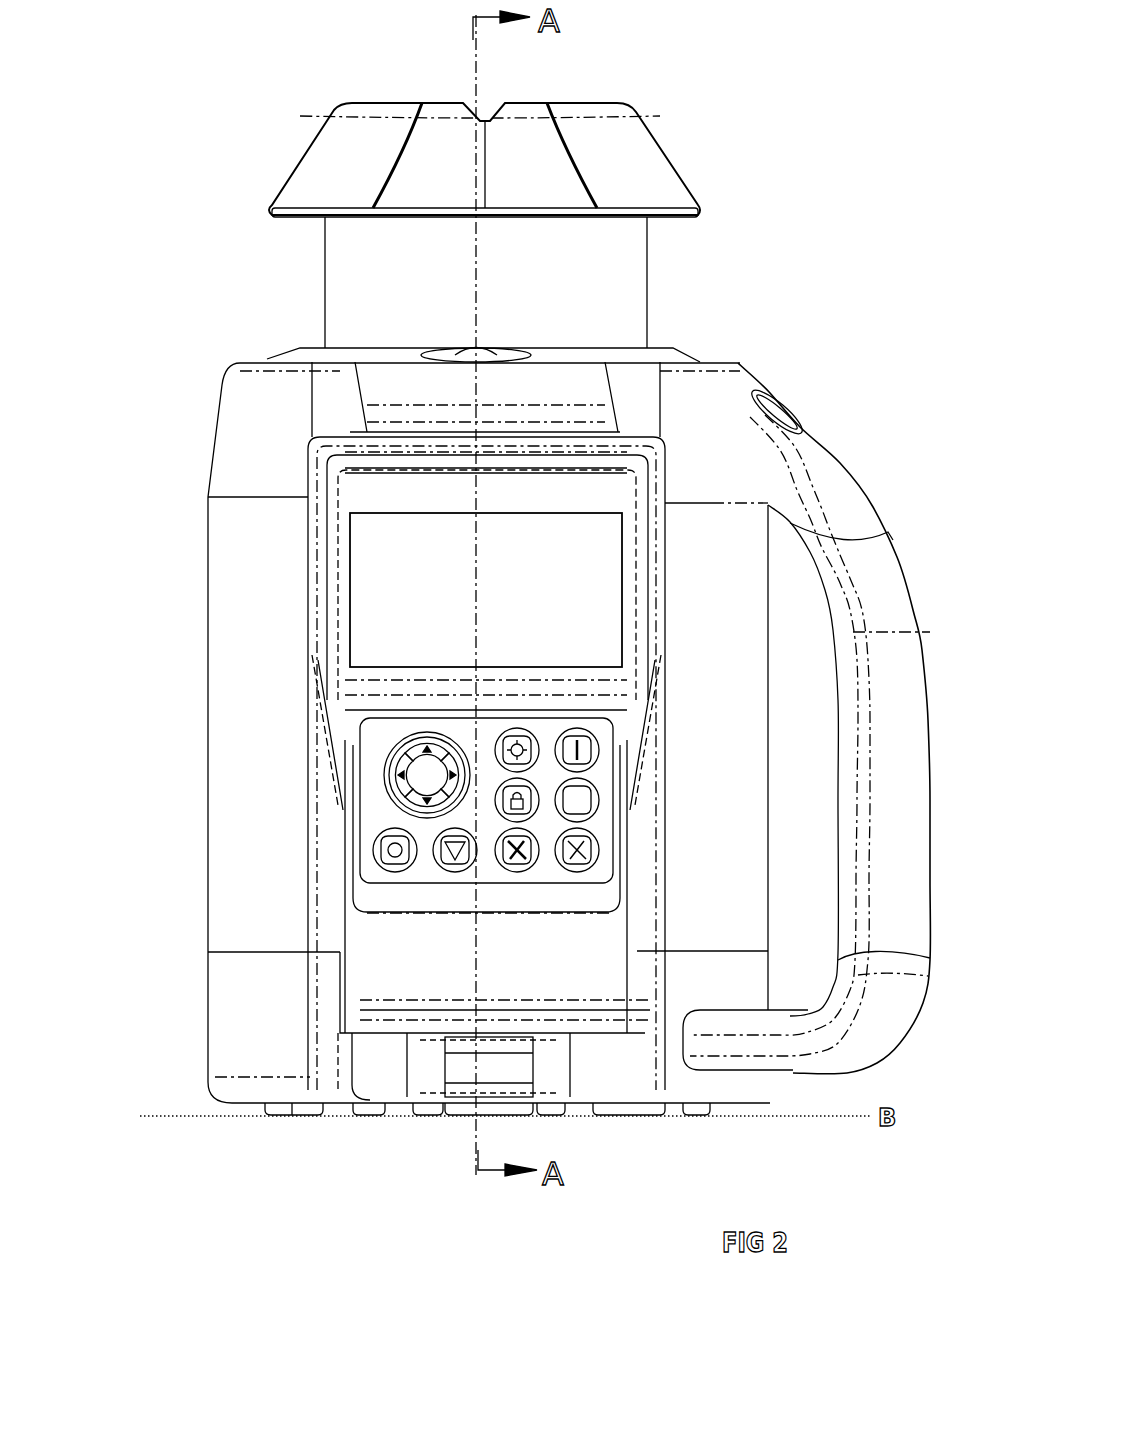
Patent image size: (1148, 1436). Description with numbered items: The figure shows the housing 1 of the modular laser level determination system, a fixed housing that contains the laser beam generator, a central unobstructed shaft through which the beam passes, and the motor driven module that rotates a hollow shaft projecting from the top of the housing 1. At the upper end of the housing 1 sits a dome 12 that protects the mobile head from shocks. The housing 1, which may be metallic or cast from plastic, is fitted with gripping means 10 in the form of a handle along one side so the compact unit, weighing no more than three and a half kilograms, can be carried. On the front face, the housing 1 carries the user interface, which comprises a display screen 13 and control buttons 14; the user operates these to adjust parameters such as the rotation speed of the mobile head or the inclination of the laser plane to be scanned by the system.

The housing 1 is at (203, 400).
The gripping means 10 is at (868, 517).
The dome 12 is at (670, 174).
The display screen 13 is at (407, 598).
The control buttons 14 is at (390, 812).